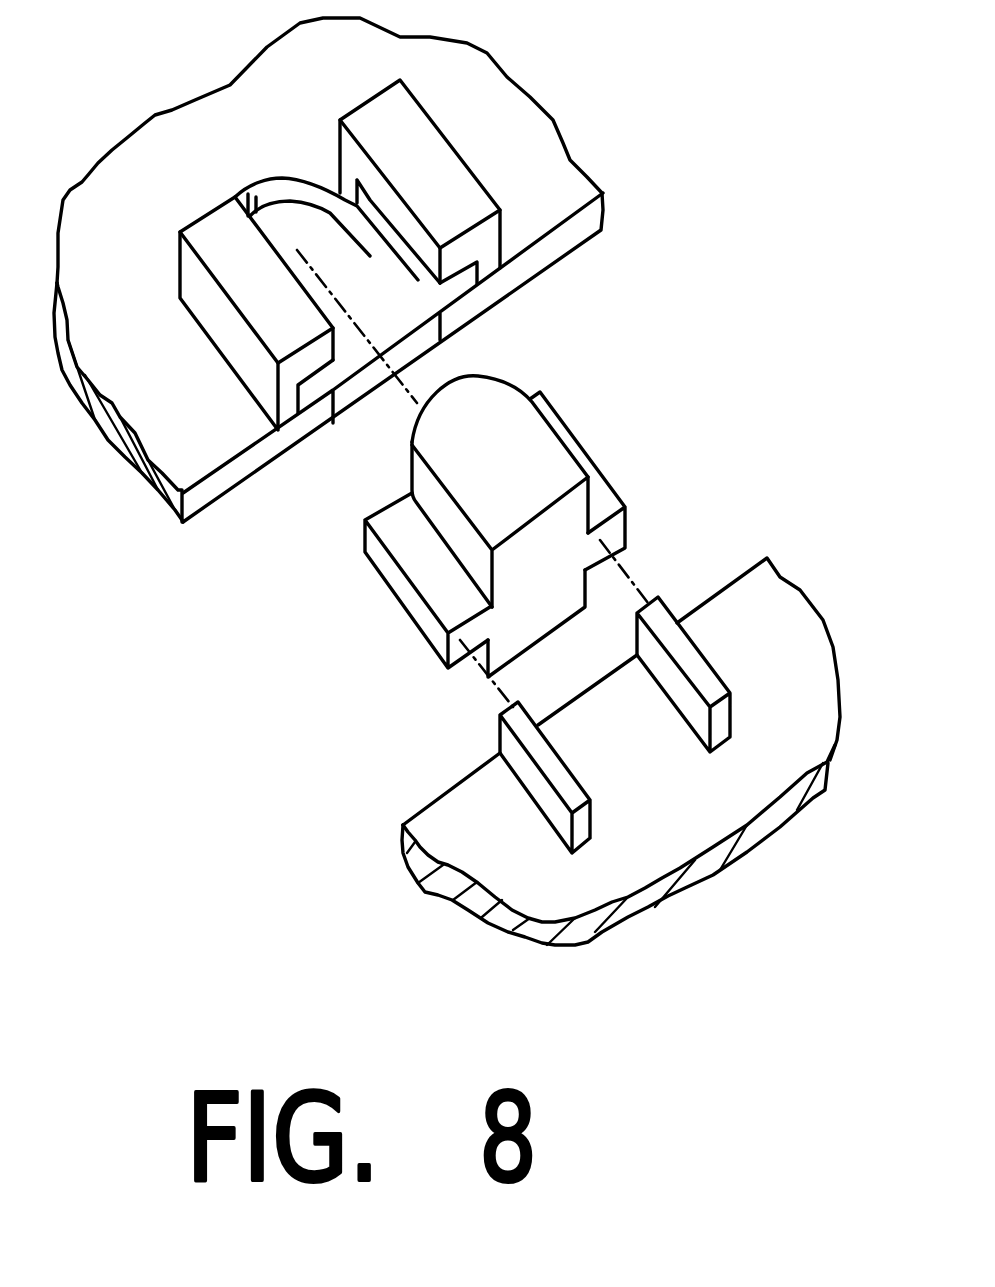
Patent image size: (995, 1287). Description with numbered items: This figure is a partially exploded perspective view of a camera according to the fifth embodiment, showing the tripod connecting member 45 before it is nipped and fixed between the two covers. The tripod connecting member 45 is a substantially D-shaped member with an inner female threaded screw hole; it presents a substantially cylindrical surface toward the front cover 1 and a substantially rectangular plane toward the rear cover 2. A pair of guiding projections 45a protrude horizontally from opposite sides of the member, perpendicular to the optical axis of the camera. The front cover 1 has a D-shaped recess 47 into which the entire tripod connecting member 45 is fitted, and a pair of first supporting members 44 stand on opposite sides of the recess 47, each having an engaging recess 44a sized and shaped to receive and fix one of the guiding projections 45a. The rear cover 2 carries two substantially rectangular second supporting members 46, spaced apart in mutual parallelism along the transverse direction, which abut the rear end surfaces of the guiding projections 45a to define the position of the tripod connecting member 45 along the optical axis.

The front cover 1 is at (495, 105).
The rear cover 2 is at (783, 637).
The first supporting members 44 is at (222, 240).
The engaging recess 44a is at (455, 288).
The tripod connecting member 45 is at (527, 455).
The guiding projections 45a is at (603, 497).
The second supporting members 46 is at (668, 630).
The D-shaped recess 47 is at (287, 190).